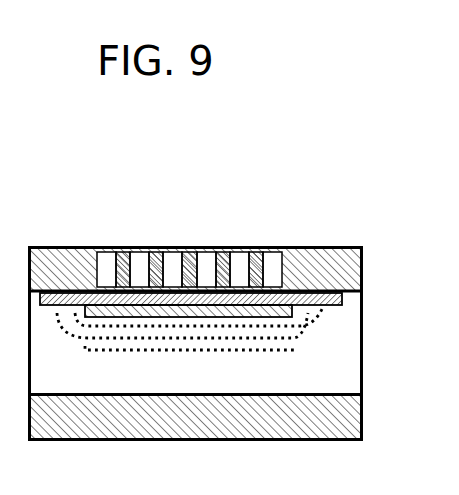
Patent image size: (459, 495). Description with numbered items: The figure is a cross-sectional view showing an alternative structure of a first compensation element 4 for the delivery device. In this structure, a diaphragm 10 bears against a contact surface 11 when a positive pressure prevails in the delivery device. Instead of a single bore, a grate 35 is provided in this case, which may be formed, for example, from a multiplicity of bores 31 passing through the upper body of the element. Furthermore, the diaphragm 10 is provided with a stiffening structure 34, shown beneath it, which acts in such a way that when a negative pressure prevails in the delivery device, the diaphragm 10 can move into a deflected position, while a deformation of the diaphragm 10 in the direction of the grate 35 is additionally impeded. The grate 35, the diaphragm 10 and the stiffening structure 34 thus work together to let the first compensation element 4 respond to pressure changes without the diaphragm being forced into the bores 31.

The first compensation element 4 is at (317, 205).
The diaphragm 10 is at (325, 307).
The contact surface 11 is at (133, 248).
The bores 31 is at (268, 247).
The stiffening structure 34 is at (295, 330).
The grate 35 is at (192, 247).